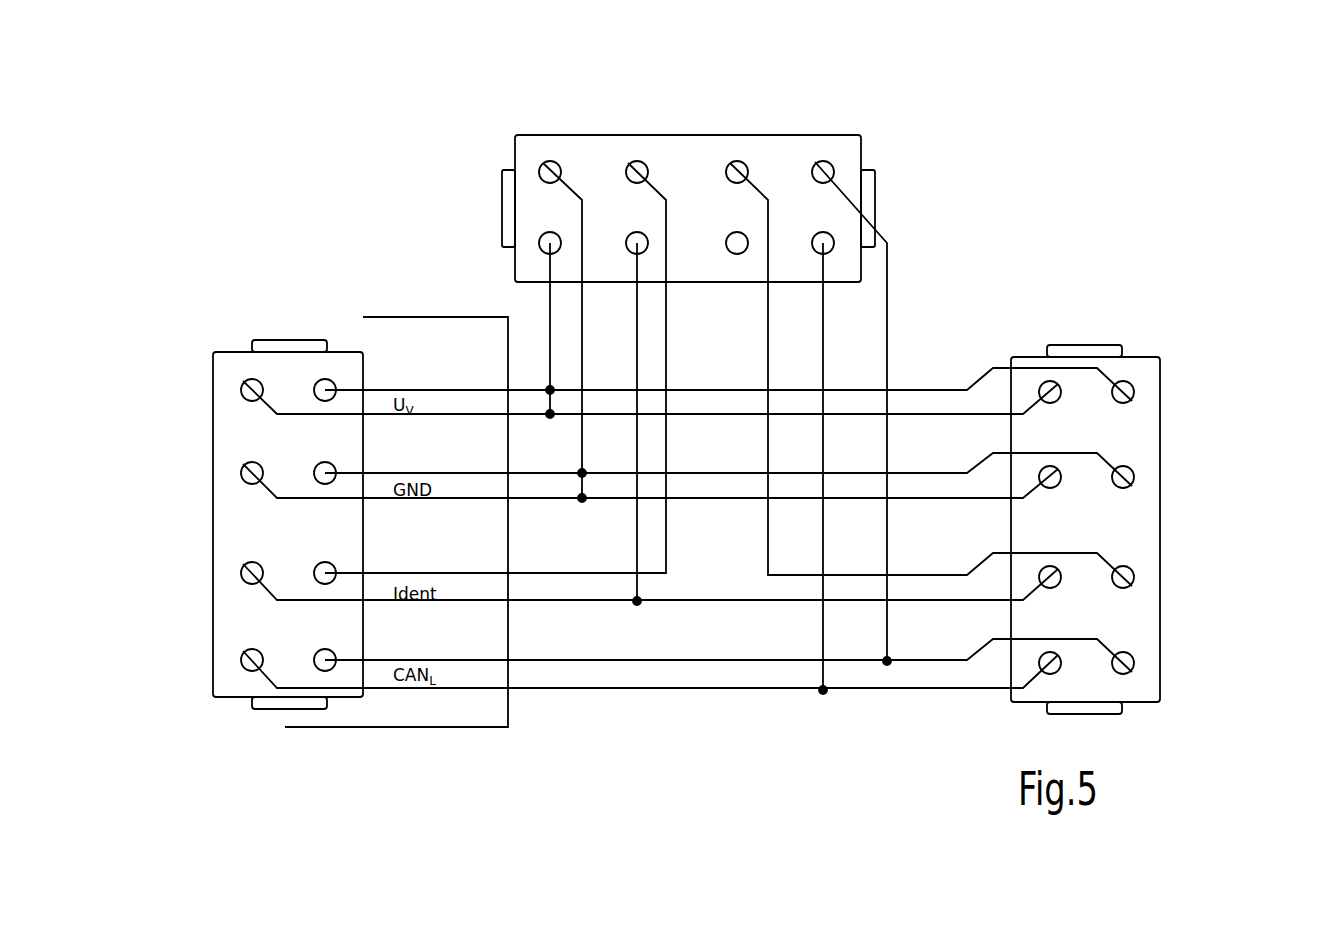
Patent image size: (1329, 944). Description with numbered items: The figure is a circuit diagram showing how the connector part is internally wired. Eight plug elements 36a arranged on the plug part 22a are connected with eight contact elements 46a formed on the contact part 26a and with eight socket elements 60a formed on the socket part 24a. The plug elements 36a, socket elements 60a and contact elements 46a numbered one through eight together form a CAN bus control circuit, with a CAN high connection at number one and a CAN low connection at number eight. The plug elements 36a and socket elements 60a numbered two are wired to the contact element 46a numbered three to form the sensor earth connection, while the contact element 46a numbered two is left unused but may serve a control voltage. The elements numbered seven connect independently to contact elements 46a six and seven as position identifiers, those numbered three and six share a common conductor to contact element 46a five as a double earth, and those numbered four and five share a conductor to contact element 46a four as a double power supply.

The plug part 22a is at (230, 358).
The socket part 24a is at (1137, 370).
The contact part 26a is at (528, 272).
The plug elements 36a is at (244, 655).
The contact elements 46a is at (820, 161).
The socket elements 60a is at (1134, 664).